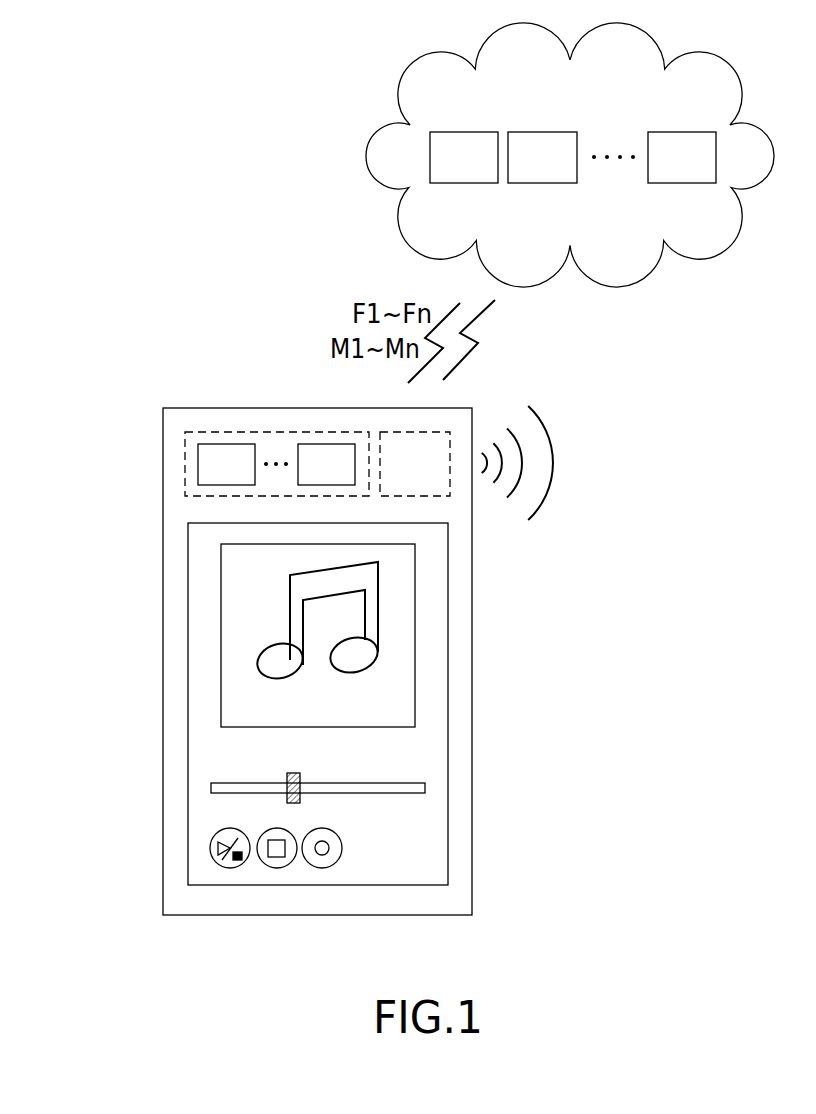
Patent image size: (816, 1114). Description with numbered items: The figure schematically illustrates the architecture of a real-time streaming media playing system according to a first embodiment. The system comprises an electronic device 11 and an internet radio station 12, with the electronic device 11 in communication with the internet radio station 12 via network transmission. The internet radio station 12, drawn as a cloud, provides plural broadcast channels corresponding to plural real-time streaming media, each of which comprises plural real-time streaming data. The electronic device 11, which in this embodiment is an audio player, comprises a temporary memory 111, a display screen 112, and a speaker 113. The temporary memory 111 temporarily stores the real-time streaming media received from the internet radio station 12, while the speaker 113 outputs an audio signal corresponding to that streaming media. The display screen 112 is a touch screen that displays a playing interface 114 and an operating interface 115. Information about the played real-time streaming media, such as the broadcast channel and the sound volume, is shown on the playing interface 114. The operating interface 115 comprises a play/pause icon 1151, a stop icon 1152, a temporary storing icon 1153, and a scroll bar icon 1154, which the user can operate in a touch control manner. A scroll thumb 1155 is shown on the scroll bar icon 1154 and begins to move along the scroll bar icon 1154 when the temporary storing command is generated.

The electronic device 11 is at (176, 504).
The internet radio station 12 is at (637, 43).
The temporary memory 111 is at (227, 440).
The display screen 112 is at (200, 660).
The speaker 113 is at (412, 442).
The playing interface 114 is at (397, 643).
The operating interface 115 is at (296, 854).
The play/pause icon 1151 is at (217, 842).
The stop icon 1152 is at (262, 863).
The temporary storing icon 1153 is at (397, 830).
The scroll bar icon 1154 is at (342, 788).
The scroll thumb 1155 is at (288, 772).